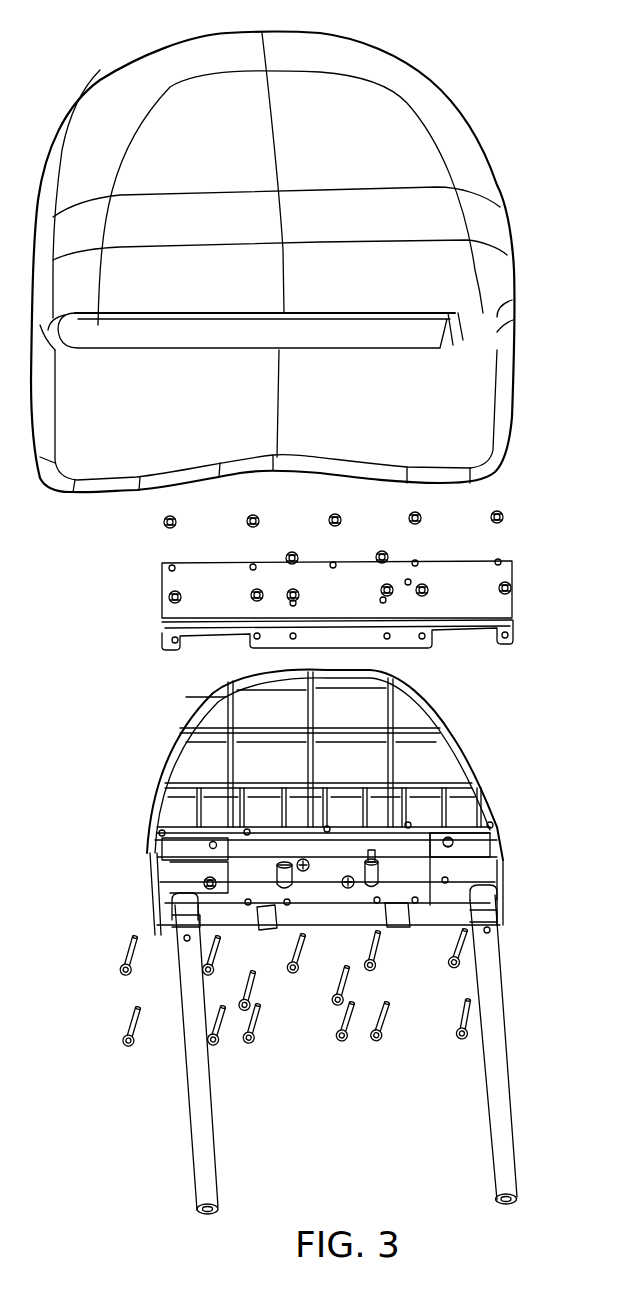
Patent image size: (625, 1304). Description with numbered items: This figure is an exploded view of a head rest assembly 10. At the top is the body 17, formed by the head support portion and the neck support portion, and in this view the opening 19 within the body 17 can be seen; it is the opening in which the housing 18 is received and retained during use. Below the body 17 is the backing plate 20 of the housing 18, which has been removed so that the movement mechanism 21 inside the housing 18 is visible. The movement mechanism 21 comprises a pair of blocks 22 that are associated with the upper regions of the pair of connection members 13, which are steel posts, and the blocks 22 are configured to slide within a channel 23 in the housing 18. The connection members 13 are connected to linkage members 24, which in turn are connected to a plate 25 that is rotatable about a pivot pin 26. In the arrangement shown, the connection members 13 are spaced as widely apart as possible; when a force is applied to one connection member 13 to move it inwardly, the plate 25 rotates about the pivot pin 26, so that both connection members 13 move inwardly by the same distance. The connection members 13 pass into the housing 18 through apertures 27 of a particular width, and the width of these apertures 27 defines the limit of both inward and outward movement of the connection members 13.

The head rest assembly 10 is at (116, 574).
The connection members 13 is at (208, 1168).
The body 17 is at (385, 176).
The housing 18 is at (470, 748).
The opening 19 is at (419, 323).
The backing plate 20 is at (470, 580).
The movement mechanism 21 is at (497, 878).
The blocks 22 is at (185, 853).
The channel 23 is at (268, 858).
The linkage members 24 is at (232, 862).
The plate 25 is at (300, 885).
The pivot pin 26 is at (325, 880).
The apertures 27 is at (205, 920).